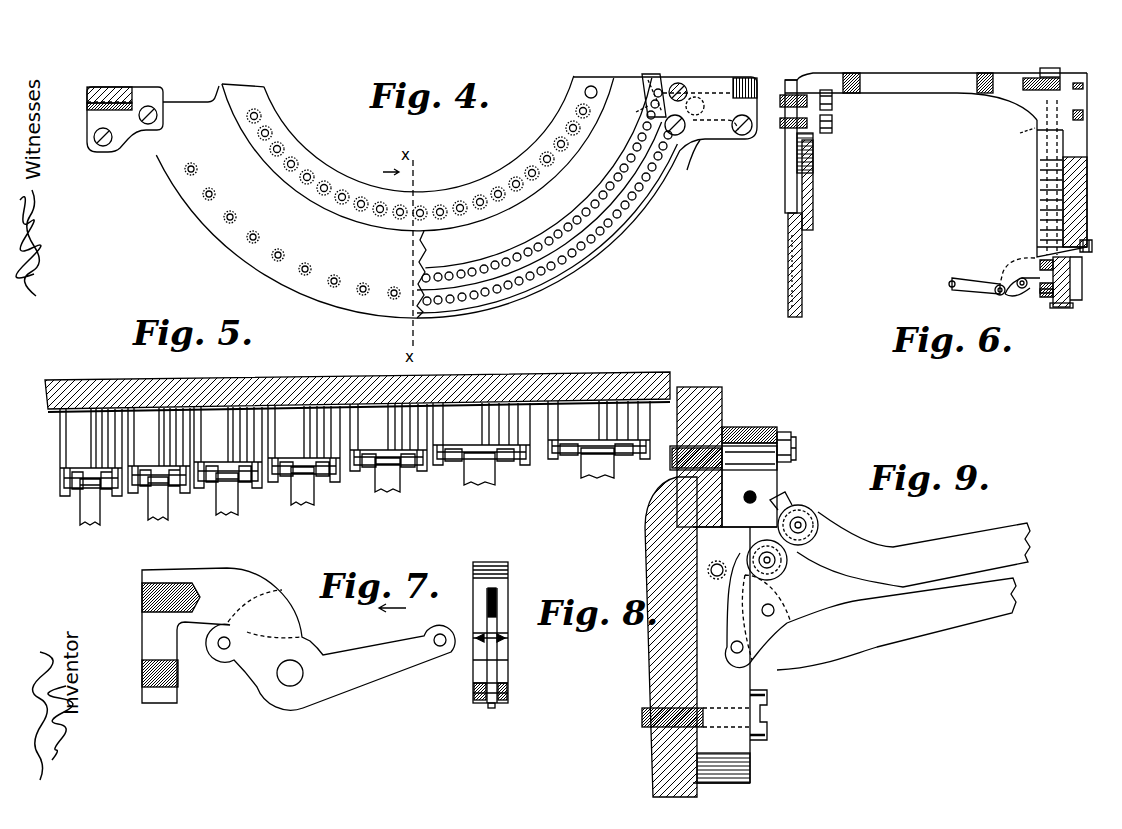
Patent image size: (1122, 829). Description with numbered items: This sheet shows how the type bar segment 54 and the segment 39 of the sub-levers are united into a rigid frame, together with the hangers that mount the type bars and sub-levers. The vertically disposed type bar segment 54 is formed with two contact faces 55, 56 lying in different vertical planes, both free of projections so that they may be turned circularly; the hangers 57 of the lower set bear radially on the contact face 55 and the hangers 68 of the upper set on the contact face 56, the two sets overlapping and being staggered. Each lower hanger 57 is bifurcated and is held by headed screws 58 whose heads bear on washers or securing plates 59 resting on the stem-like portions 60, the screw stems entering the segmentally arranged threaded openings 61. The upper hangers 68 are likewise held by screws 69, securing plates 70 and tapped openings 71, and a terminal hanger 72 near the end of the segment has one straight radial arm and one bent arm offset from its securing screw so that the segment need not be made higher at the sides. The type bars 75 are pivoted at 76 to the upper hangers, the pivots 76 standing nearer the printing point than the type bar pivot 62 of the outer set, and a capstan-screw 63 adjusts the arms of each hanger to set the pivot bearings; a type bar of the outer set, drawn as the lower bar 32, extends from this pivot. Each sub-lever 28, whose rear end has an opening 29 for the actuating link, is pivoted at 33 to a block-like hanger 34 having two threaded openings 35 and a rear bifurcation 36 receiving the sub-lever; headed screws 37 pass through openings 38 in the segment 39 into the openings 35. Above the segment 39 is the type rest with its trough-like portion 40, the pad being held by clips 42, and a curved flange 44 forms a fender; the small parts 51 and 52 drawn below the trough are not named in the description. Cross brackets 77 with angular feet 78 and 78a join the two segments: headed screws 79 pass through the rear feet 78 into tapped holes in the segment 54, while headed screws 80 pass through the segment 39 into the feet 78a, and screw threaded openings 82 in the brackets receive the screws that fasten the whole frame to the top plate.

In FIG. 6, the sub-lever 28 is at (977, 284).
In FIG. 7, the sub-lever 28 is at (376, 686).
In FIG. 6, the opening 29 is at (952, 281).
In FIG. 7, the opening 29 is at (441, 633).
In FIG. 9, the lever arm 32 is at (870, 611).
In FIG. 7, the pivot 33 is at (290, 682).
In FIG. 6, the hanger 34 is at (1010, 262).
In FIG. 7, the hanger 34 is at (245, 572).
In FIG. 8, the hanger 34 is at (508, 568).
In FIG. 7, the threaded openings 35 is at (190, 583).
In FIG. 8, the bifurcation 36 is at (497, 606).
In FIG. 6, the headed screws 37 is at (1071, 269).
In FIG. 4, the openings 38 is at (528, 248).
In FIG. 4, the segment 39 is at (563, 268).
In FIG. 6, the segment 39 is at (1062, 308).
In FIG. 6, the trough-like portion 40 is at (1037, 210).
In FIG. 4, the catches or clips 42 is at (650, 74).
In FIG. 6, the catches or clips 42 is at (1058, 72).
In FIG. 6, the flange 44 is at (1096, 246).
In FIG. 6, the pin 51 is at (1073, 296).
In FIG. 6, the arm 52 is at (1073, 308).
In FIG. 4, the type bar segment 54 is at (213, 92).
In FIG. 5, the type bar segment 54 is at (308, 378).
In FIG. 6, the type bar segment 54 is at (788, 234).
In FIG. 4, the contact face 55 is at (292, 231).
In FIG. 6, the contact face 55 is at (802, 262).
In FIG. 9, the contact face 55 is at (655, 650).
In FIG. 4, the contact face 56 is at (418, 153).
In FIG. 5, the contact face 56 is at (355, 404).
In FIG. 6, the contact face 56 is at (813, 212).
In FIG. 9, the contact face 56 is at (722, 398).
In FIG. 9, the hangers 57 is at (735, 613).
In FIG. 9, the headed screws 58 is at (765, 695).
In FIG. 9, the washers or securing plates 59 is at (758, 740).
In FIG. 9, the stem-like portions 60 is at (740, 784).
In FIG. 4, the threaded openings 61 is at (390, 290).
In FIG. 9, the type bar pivot 62 is at (787, 556).
In FIG. 9, the capstan-screw 63 is at (754, 493).
In FIG. 5, the hangers 68 is at (60, 434).
In FIG. 9, the hangers 68 is at (758, 427).
In FIG. 9, the screws 69 is at (796, 440).
In FIG. 9, the washers or securing plates 70 is at (784, 432).
In FIG. 4, the tapped openings 71 is at (355, 200).
In FIG. 5, the hangers 72 is at (527, 416).
In FIG. 5, the type bars 75 is at (100, 510).
In FIG. 9, the type bars 75 is at (913, 549).
In FIG. 5, the pivots 76 is at (214, 498).
In FIG. 9, the pivots 76 is at (806, 518).
In FIG. 4, the cross brackets 77 is at (107, 87).
In FIG. 6, the cross brackets 77 is at (930, 93).
In FIG. 4, the securing members 78 is at (118, 110).
In FIG. 6, the securing members 78 is at (812, 140).
In FIG. 4, the securing members 78a is at (630, 111).
In FIG. 6, the securing members 78a is at (1015, 139).
In FIG. 4, the headed screws 79 is at (157, 116).
In FIG. 6, the headed screws 79 is at (833, 122).
In FIG. 4, the headed screws 80 is at (680, 83).
In FIG. 6, the headed screws 80 is at (1084, 88).
In FIG. 6, the screw threaded openings 82 is at (851, 73).